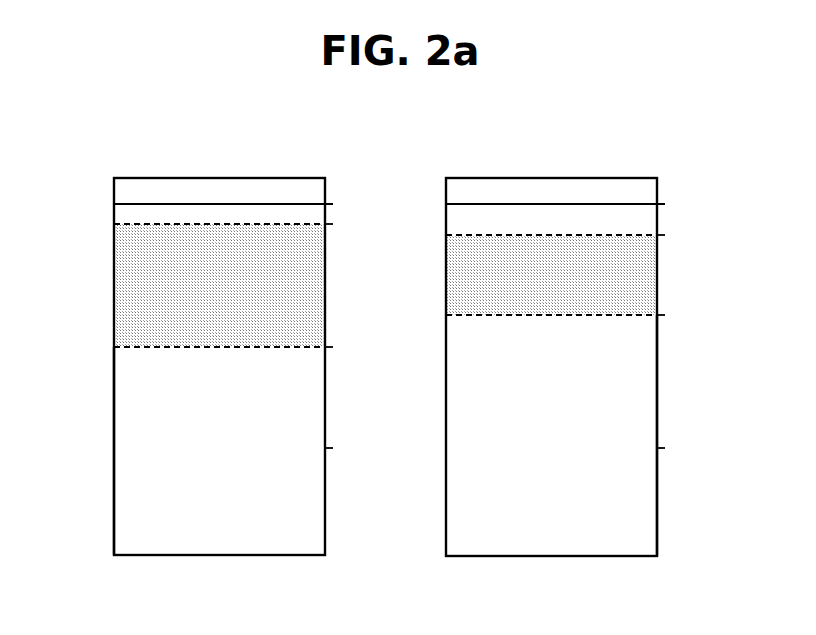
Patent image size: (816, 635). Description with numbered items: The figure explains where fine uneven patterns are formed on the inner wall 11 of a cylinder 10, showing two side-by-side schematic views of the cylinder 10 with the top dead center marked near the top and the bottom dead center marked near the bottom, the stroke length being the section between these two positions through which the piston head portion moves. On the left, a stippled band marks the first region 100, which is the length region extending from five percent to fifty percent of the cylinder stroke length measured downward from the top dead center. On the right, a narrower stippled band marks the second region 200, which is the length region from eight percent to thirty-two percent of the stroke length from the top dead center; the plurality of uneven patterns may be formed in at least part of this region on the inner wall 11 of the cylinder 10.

The cylinder 10 is at (230, 178).
The inner wall of cylinder 11 is at (125, 388).
The first region 100 is at (310, 307).
The second region 200 is at (642, 282).